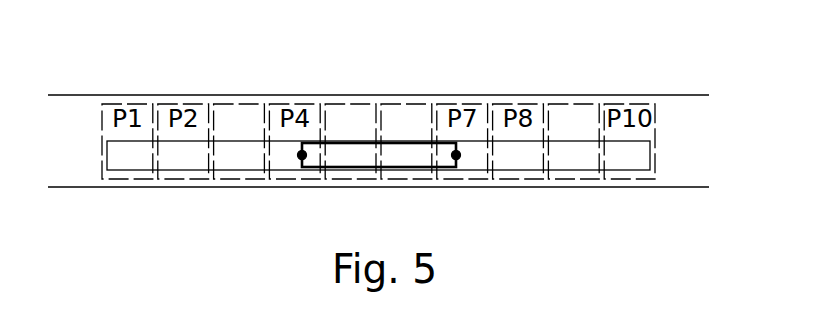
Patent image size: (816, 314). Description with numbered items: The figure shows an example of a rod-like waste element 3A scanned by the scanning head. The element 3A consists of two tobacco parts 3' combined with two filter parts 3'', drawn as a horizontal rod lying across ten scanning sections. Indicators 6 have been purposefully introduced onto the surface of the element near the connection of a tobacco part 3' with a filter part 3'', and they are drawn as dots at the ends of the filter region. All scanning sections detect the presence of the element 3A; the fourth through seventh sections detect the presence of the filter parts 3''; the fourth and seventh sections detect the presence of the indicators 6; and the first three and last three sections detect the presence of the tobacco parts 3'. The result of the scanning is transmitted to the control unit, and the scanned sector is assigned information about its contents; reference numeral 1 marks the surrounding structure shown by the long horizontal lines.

The display panel 1 is at (392, 169).
The tobacco part 3' is at (371, 101).
The filter part 3'' is at (363, 100).
The element 3A is at (378, 194).
The indicator 6 is at (396, 195).